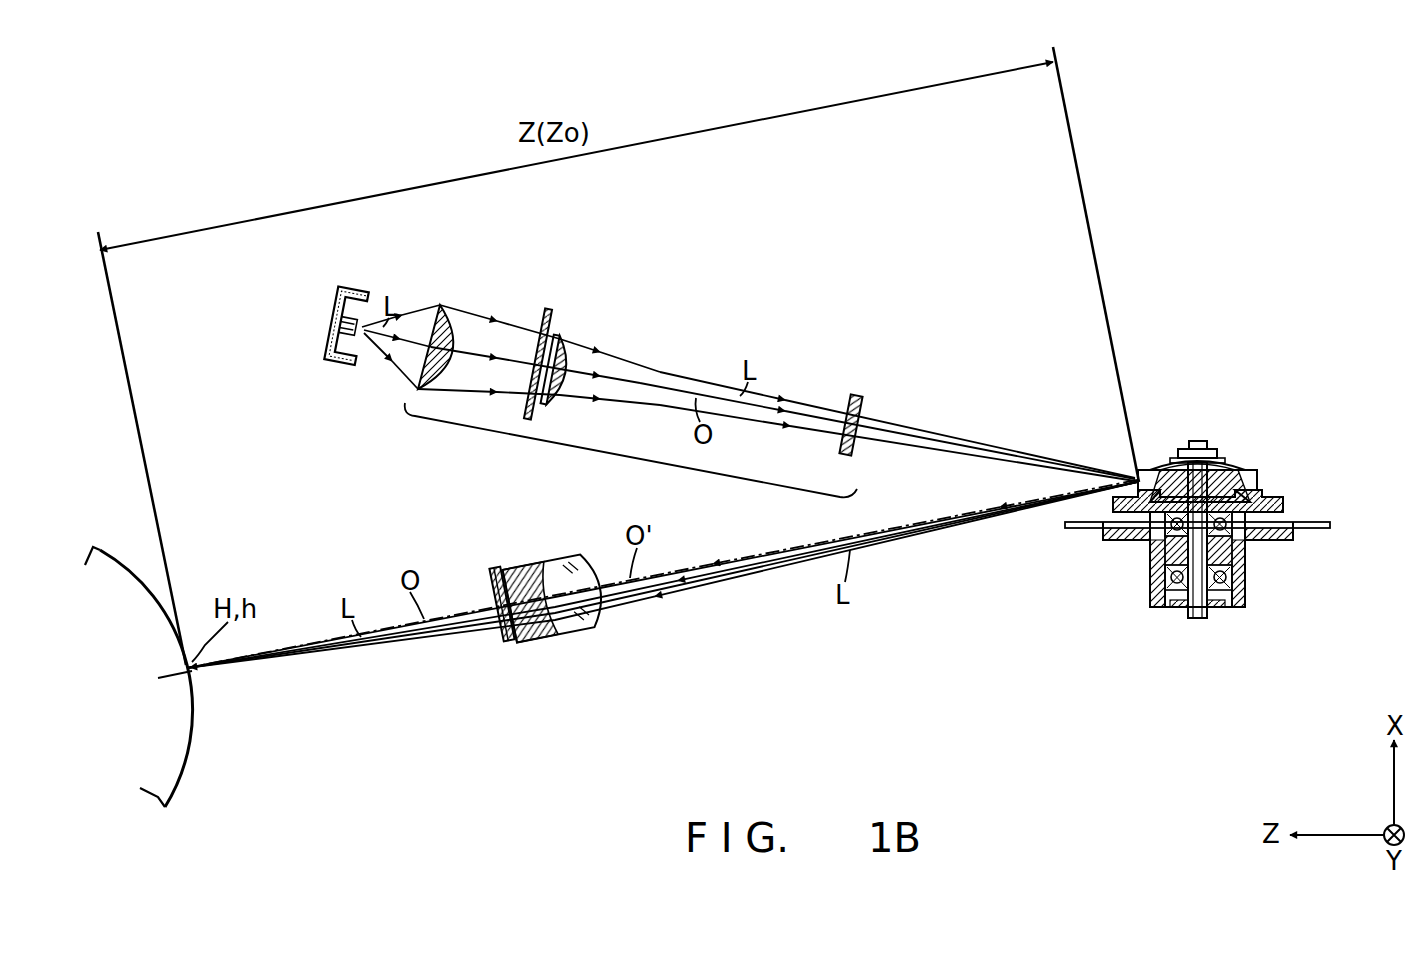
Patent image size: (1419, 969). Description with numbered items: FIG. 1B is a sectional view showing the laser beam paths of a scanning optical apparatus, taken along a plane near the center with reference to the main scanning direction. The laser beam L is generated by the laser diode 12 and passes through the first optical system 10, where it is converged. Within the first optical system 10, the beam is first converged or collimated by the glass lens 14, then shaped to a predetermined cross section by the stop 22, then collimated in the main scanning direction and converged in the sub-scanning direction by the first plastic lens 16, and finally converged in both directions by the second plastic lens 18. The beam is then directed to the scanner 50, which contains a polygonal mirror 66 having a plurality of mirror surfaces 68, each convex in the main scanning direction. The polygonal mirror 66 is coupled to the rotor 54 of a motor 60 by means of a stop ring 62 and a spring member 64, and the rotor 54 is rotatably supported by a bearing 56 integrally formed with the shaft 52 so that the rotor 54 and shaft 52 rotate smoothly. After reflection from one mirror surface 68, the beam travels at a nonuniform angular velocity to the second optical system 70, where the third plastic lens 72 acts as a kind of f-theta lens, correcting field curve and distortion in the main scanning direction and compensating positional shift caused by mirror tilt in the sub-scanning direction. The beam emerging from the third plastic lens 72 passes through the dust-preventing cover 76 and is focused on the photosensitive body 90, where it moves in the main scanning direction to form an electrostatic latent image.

The first optical system 10 is at (631, 451).
The laser diode 12 is at (333, 363).
The glass lens 14 is at (441, 305).
The first plastic lens 16 is at (566, 342).
The second plastic lens 18 is at (858, 397).
The stop 22 is at (549, 312).
The scanner 50 is at (1199, 526).
The shaft 52 is at (1196, 441).
The rotor 54 is at (1290, 512).
The bearing 56 is at (1165, 602).
The motor 60 is at (1150, 582).
The stop ring 62 is at (1214, 452).
The spring member 64 is at (1243, 462).
The polygonal mirror 66 is at (1146, 468).
The mirror surface 68 is at (1258, 481).
The second optical system 70 is at (548, 647).
The third plastic lens 72 is at (505, 692).
The dust-preventing cover 76 is at (508, 641).
The photosensitive body 90 is at (190, 720).